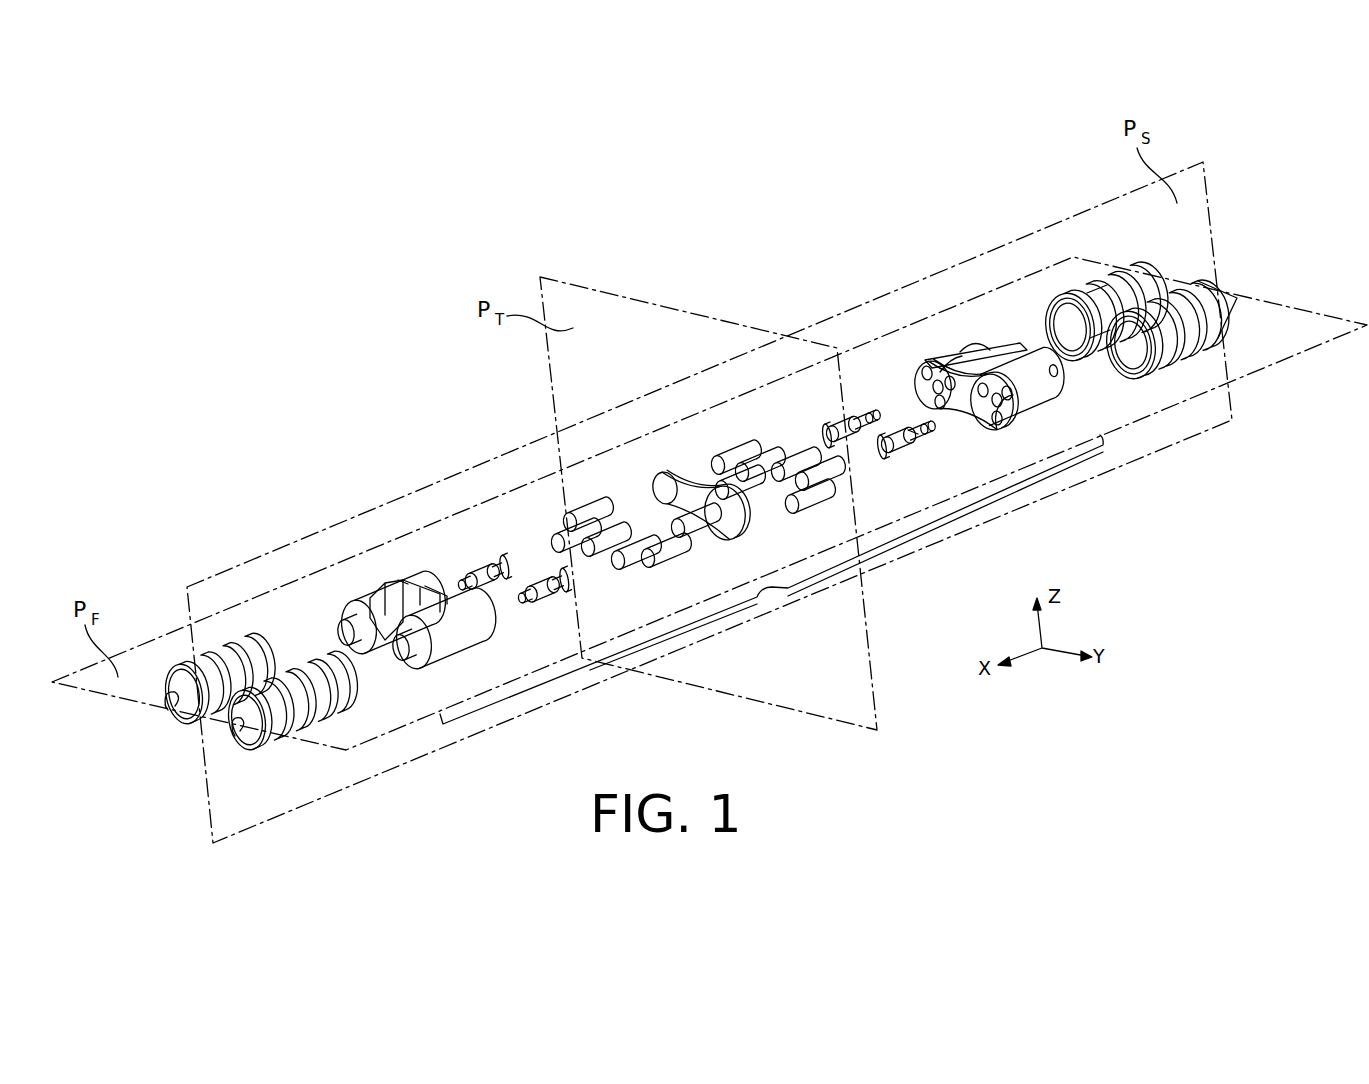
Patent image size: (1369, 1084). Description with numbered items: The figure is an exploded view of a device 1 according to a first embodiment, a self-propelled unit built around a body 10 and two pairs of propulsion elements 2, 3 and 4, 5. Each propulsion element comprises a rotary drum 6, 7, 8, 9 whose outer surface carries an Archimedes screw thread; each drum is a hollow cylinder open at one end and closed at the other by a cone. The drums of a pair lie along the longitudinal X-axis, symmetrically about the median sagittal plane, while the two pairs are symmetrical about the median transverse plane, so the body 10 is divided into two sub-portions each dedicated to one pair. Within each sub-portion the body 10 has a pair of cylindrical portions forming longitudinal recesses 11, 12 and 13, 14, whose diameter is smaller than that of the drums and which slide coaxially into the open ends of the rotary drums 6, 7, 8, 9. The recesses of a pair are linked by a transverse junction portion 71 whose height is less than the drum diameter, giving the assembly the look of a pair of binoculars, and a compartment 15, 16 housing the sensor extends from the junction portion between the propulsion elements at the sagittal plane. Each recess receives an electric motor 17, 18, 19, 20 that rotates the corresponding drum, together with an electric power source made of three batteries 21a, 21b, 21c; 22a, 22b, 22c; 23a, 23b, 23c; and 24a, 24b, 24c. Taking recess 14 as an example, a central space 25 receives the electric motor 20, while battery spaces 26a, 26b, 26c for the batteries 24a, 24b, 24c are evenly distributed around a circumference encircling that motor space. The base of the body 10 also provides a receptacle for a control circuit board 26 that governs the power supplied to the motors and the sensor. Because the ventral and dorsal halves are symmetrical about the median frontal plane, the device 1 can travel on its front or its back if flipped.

The device 1 is at (417, 338).
The propulsion element 2 is at (182, 675).
The propulsion element 3 is at (252, 725).
The propulsion element 4 is at (1146, 275).
The propulsion element 5 is at (1208, 305).
The rotary drum 6 is at (176, 666).
The rotary drum 7 is at (251, 722).
The rotary drum 8 is at (1100, 284).
The rotary drum 9 is at (1230, 337).
The body 10 is at (771, 579).
The longitudinal recess 11 is at (375, 597).
The longitudinal recess 12 is at (462, 631).
The longitudinal recess 13 is at (950, 363).
The longitudinal recess 14 is at (1037, 363).
The compartment 15 is at (392, 589).
The compartment 16 is at (975, 347).
The electric motor 17 is at (432, 590).
The electric motor 18 is at (480, 565).
The electric motor 19 is at (850, 452).
The electric motor 20 is at (910, 425).
The battery 21a is at (588, 512).
The battery 21b is at (553, 530).
The battery 21c is at (623, 533).
The battery 22a is at (690, 535).
The battery 22b is at (603, 572).
The battery 22c is at (655, 557).
The battery 23a is at (753, 447).
The battery 23b is at (740, 483).
The battery 23c is at (713, 488).
The battery 24a is at (850, 470).
The battery 24b is at (807, 462).
The battery 24c is at (803, 500).
The space for receiving the electric motor 25 is at (1017, 420).
The control circuit board 26 is at (657, 478).
The space for receiving a battery 26a is at (1007, 397).
The space for receiving a battery 26b is at (967, 417).
The space for receiving a battery 26c is at (992, 430).
The transverse junction portion 71 is at (403, 582).